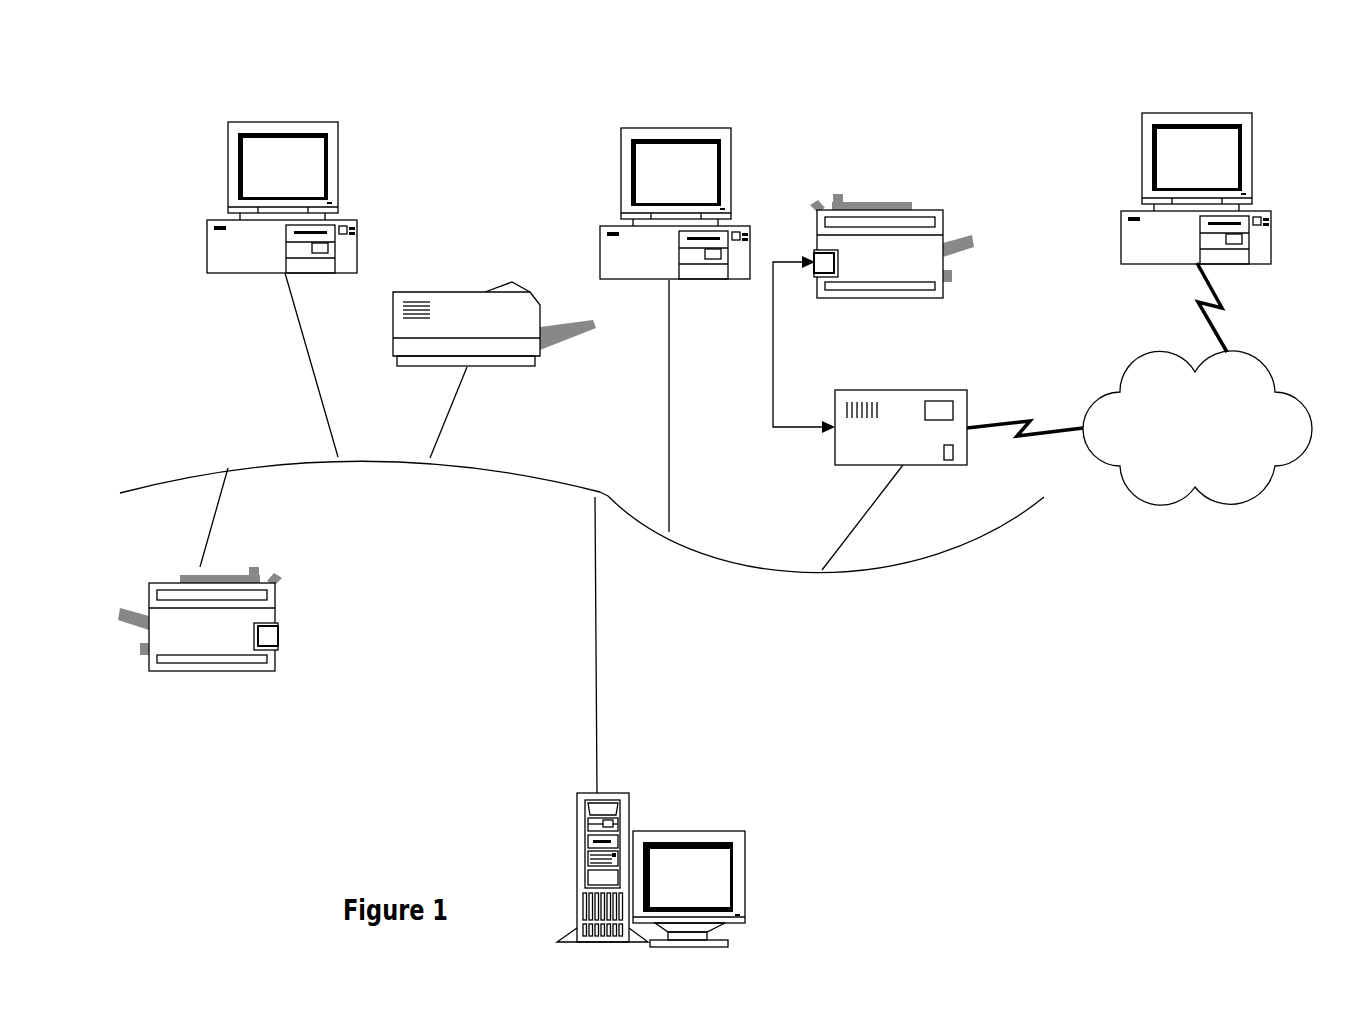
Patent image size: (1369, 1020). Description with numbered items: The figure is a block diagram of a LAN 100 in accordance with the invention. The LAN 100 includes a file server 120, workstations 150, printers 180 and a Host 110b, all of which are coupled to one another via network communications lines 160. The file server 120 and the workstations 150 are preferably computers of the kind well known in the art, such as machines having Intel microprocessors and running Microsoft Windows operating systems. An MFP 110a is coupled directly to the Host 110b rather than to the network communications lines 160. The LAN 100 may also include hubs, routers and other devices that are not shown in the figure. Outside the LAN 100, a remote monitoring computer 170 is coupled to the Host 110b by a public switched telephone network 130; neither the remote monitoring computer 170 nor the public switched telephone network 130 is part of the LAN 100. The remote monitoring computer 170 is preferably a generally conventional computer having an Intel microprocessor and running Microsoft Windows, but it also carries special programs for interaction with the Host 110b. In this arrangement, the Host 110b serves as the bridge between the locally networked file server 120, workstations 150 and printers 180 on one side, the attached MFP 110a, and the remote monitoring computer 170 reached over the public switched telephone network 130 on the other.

The LAN 100 is at (163, 397).
The MFP 110a is at (890, 202).
The Host 110b is at (897, 390).
The file server 120 is at (690, 831).
The public switched telephone network 130 is at (1227, 503).
The workstations 150 is at (283, 122).
The network communications lines 160 is at (393, 460).
The remote monitoring computer 170 is at (1197, 113).
The printers 180 is at (467, 292).